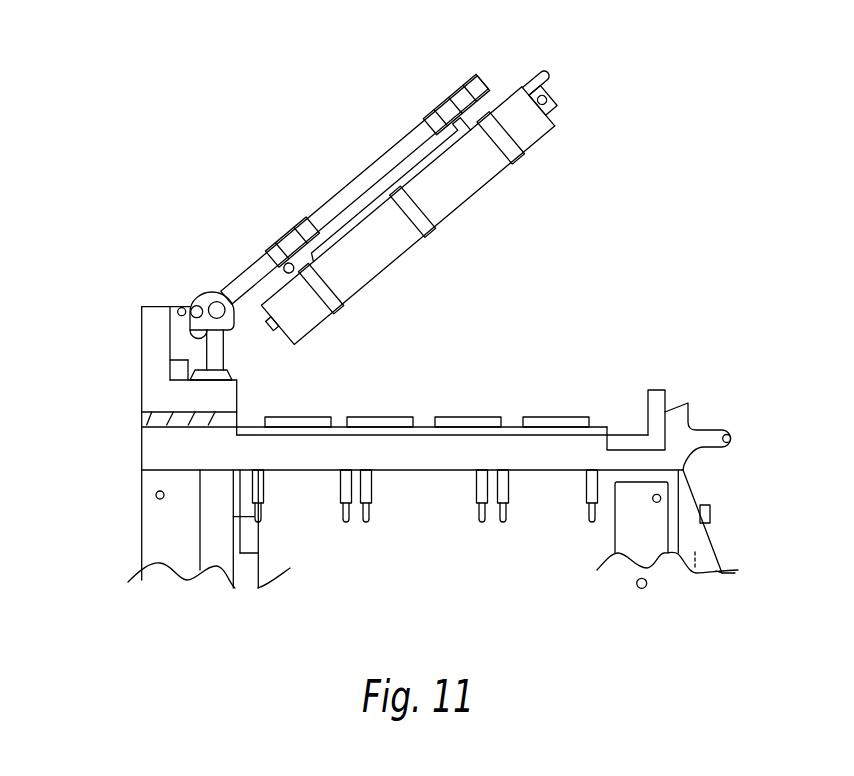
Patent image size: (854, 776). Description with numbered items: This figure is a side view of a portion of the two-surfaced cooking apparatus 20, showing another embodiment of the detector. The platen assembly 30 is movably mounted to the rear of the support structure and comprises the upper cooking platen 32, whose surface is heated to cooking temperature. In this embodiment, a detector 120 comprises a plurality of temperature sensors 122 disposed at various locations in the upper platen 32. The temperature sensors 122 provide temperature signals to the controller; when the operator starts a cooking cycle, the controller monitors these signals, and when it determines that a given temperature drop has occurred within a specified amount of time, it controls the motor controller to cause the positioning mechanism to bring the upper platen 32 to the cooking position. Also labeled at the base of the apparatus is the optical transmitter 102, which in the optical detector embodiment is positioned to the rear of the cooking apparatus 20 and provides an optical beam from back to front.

The cooking apparatus 20 is at (268, 156).
The platen assembly 30 is at (611, 73).
The upper cooking platen 32 is at (537, 130).
The detector 120 is at (551, 207).
The temperature sensors 122 is at (337, 310).
The optical transmitter 102 is at (142, 419).